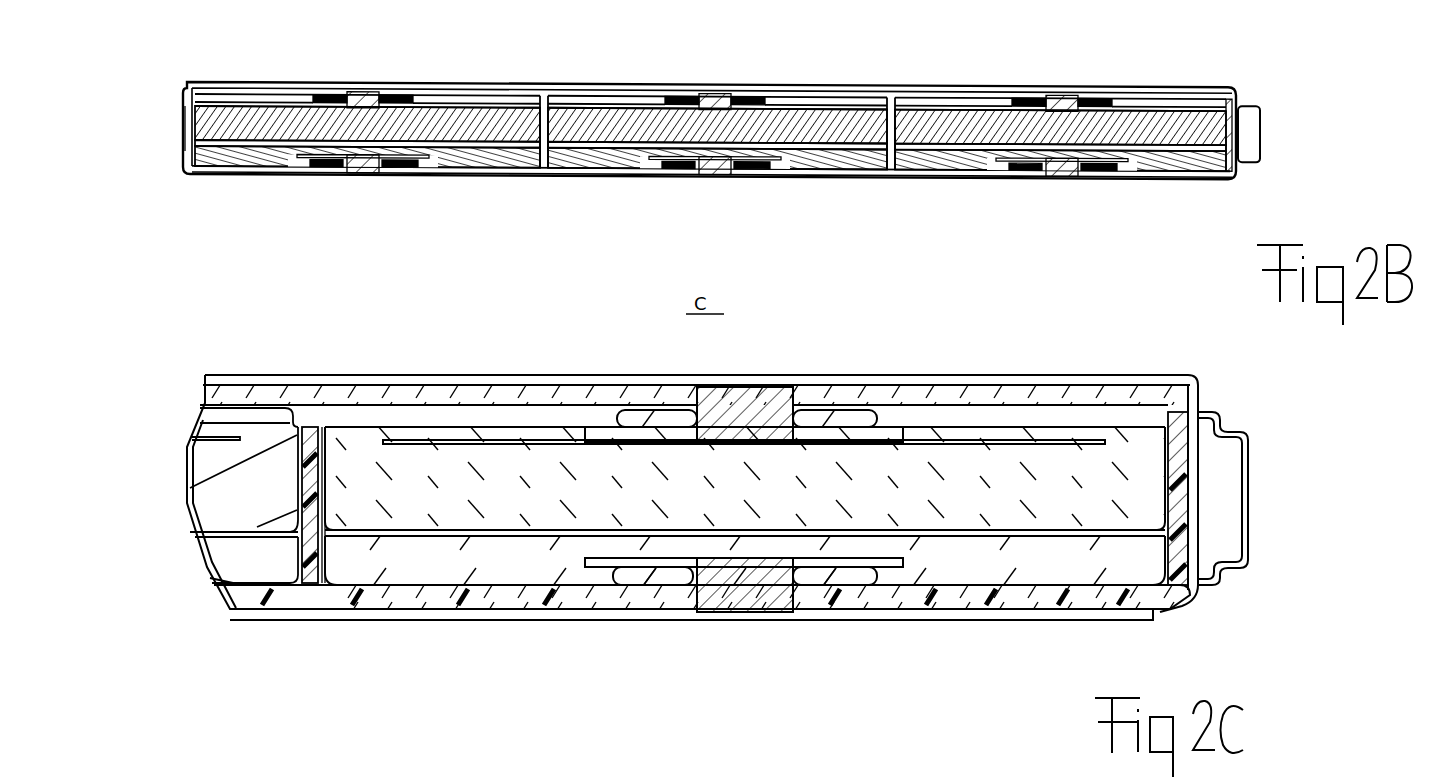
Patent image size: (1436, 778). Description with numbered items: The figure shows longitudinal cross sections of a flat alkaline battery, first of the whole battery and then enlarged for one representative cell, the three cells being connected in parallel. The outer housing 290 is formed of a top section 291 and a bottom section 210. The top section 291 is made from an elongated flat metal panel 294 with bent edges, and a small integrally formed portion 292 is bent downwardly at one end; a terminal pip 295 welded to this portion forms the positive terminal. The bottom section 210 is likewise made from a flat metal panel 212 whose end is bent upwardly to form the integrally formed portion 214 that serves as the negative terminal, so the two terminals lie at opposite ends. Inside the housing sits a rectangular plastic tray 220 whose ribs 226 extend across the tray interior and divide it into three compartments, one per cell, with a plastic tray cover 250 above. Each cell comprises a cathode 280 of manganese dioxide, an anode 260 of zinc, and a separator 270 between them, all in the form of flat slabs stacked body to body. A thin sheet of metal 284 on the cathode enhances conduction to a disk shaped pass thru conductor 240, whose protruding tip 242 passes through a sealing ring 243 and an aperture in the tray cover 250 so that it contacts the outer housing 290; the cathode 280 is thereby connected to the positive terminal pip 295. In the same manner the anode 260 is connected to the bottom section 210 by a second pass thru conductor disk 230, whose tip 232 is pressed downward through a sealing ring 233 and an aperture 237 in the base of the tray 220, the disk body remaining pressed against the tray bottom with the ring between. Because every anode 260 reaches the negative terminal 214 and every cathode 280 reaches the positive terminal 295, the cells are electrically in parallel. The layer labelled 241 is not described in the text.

In FIG. 2B, the bottom section 210 is at (245, 172).
In FIG. 2C, the bottom section 210 is at (990, 378).
In FIG. 2B, the elongated flat metal panel 212 is at (906, 172).
In FIG. 2C, the elongated flat metal panel 212 is at (340, 440).
In FIG. 2B, the negative terminal integrally formed portion 214 is at (183, 118).
In FIG. 2B, the plastic tray 220 is at (448, 167).
In FIG. 2C, the plastic tray 220 is at (402, 600).
In FIG. 2B, the ribs 226 is at (545, 95).
In FIG. 2C, the ribs 226 is at (310, 425).
In FIG. 2B, the pass thru conductor disk 230 is at (382, 165).
In FIG. 2C, the pass thru conductor disk 230 is at (757, 567).
In FIG. 2B, the protruding tip 232 is at (361, 168).
In FIG. 2C, the protruding tip 232 is at (737, 595).
In FIG. 2B, the sealing ring 233 is at (326, 165).
In FIG. 2C, the sealing ring 233 is at (642, 585).
In FIG. 2B, the aperture 237 is at (1000, 157).
In FIG. 2C, the aperture 237 is at (698, 567).
In FIG. 2C, the pass thru conductor disk 240 is at (712, 432).
In FIG. 2B, the insulating layer 241 is at (425, 92).
In FIG. 2B, the protruding tip 242 is at (365, 92).
In FIG. 2C, the protruding tip 242 is at (770, 392).
In FIG. 2B, the sealing ring 243 is at (320, 92).
In FIG. 2C, the sealing ring 243 is at (640, 412).
In FIG. 2B, the plastic tray cover 250 is at (490, 86).
In FIG. 2C, the plastic tray cover 250 is at (875, 402).
In FIG. 2B, the anode 260 is at (280, 158).
In FIG. 2C, the anode 260 is at (943, 572).
In FIG. 2B, the separator 270 is at (212, 146).
In FIG. 2C, the separator 270 is at (520, 538).
In FIG. 2B, the cathode 280 is at (235, 118).
In FIG. 2C, the cathode 280 is at (360, 445).
In FIG. 2B, the thin sheet of metal 284 is at (260, 104).
In FIG. 2C, the thin sheet of metal 284 is at (480, 440).
In FIG. 2B, the outer housing 290 is at (448, 92).
In FIG. 2B, the top section 291 is at (745, 96).
In FIG. 2C, the top section 291 is at (1040, 380).
In FIG. 2C, the integrally formed portion 292 is at (1205, 572).
In FIG. 2B, the elongated flat metal panel 294 is at (432, 100).
In FIG. 2C, the elongated flat metal panel 294 is at (845, 405).
In FIG. 2B, the terminal pip 295 is at (1262, 130).
In FIG. 2C, the terminal pip 295 is at (1250, 492).